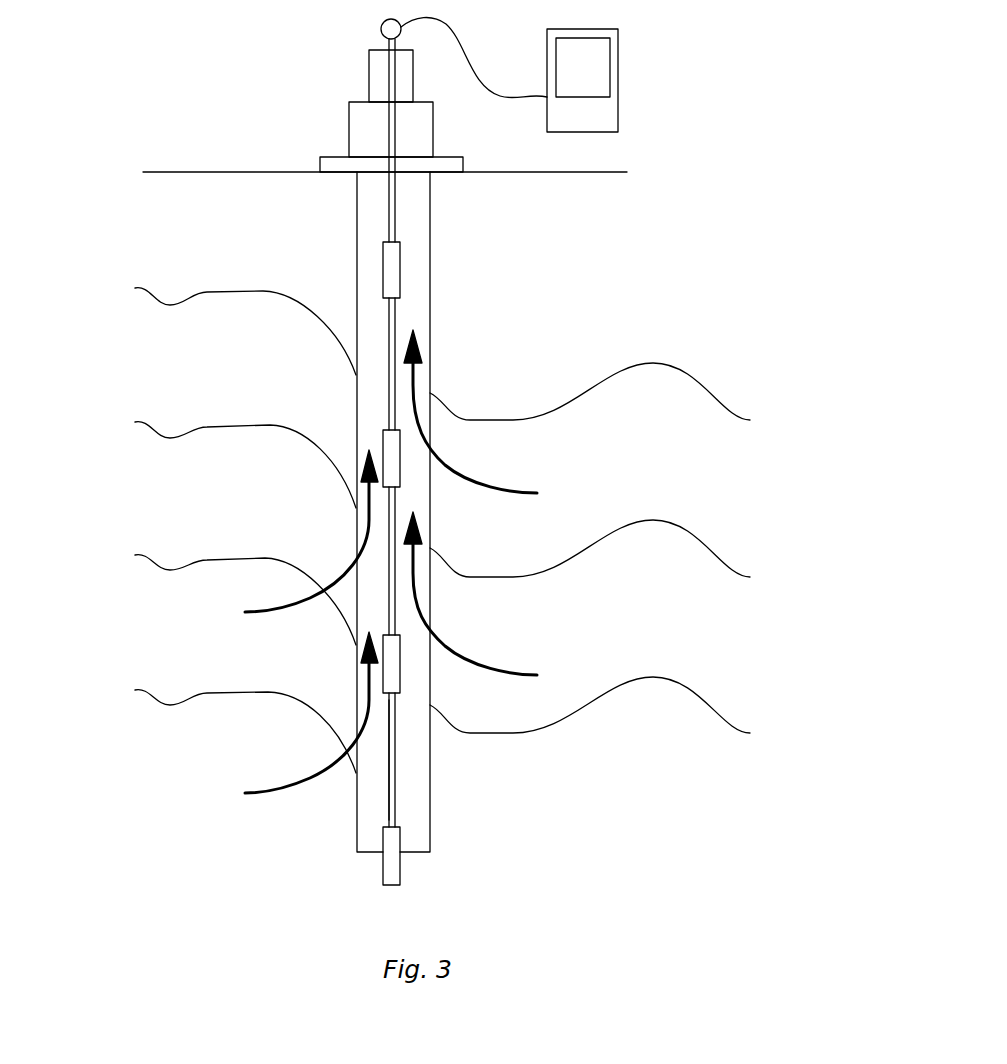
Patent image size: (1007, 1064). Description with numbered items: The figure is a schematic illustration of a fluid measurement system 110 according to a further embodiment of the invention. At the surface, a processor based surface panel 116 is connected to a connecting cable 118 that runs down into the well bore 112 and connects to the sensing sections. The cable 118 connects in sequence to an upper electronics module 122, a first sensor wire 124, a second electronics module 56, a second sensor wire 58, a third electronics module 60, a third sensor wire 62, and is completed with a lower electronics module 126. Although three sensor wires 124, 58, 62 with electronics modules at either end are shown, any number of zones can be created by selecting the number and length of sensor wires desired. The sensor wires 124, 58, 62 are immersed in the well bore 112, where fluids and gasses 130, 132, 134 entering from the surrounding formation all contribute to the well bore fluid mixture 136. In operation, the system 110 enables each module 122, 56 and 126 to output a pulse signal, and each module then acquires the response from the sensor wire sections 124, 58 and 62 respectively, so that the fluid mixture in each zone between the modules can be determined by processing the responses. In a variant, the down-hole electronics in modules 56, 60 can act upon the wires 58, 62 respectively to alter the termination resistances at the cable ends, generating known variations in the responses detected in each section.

The fluid measurement system 110 is at (246, 256).
The well bore 112 is at (430, 215).
The processor based surface panel 116 is at (593, 63).
The connecting cable 118 is at (388, 197).
The upper electronics module 122 is at (390, 265).
The first sensor wire 124 is at (392, 382).
The lower electronics module 126 is at (392, 865).
The well bore fluid mixture 136 is at (423, 310).
The second electronics module 56 is at (392, 448).
The second sensor wire 58 is at (392, 572).
The third electronics module 60 is at (392, 652).
The third sensor wire 62 is at (392, 760).
The fluid or gas 130 is at (192, 794).
The fluid or gas 132 is at (192, 653).
The fluid or gas 134 is at (192, 513).